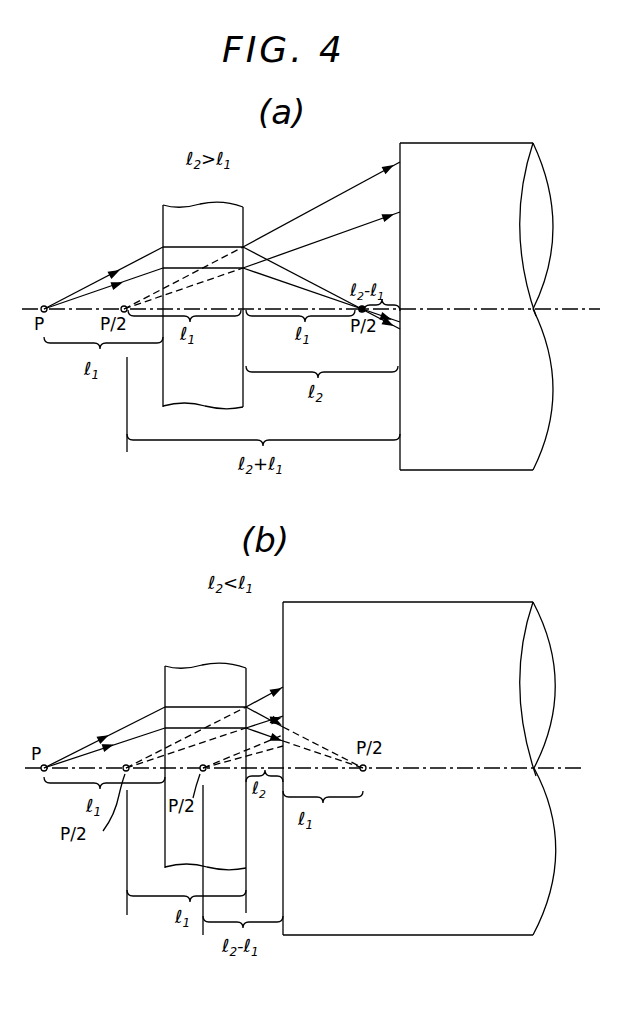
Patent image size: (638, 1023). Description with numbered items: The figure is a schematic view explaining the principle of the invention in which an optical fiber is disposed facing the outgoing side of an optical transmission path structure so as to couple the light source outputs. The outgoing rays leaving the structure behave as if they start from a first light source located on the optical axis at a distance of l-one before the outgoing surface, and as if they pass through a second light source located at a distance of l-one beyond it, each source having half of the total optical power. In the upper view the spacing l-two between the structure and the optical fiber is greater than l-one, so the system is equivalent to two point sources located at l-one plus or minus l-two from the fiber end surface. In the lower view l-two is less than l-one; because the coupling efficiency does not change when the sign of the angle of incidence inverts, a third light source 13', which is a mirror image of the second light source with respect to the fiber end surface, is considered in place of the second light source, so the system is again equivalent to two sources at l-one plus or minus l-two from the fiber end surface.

The third light source 13' is at (241, 774).